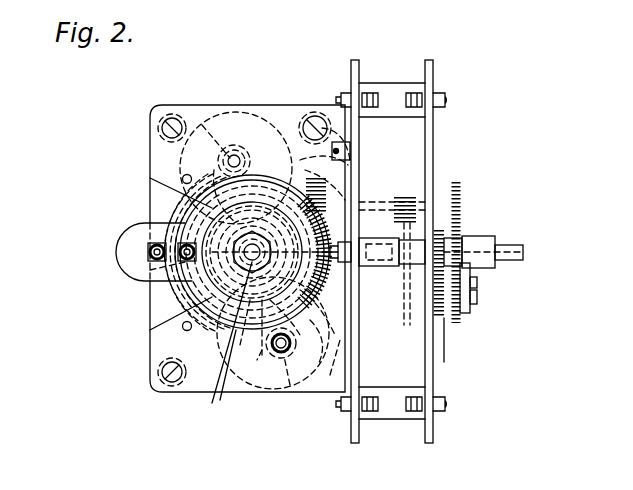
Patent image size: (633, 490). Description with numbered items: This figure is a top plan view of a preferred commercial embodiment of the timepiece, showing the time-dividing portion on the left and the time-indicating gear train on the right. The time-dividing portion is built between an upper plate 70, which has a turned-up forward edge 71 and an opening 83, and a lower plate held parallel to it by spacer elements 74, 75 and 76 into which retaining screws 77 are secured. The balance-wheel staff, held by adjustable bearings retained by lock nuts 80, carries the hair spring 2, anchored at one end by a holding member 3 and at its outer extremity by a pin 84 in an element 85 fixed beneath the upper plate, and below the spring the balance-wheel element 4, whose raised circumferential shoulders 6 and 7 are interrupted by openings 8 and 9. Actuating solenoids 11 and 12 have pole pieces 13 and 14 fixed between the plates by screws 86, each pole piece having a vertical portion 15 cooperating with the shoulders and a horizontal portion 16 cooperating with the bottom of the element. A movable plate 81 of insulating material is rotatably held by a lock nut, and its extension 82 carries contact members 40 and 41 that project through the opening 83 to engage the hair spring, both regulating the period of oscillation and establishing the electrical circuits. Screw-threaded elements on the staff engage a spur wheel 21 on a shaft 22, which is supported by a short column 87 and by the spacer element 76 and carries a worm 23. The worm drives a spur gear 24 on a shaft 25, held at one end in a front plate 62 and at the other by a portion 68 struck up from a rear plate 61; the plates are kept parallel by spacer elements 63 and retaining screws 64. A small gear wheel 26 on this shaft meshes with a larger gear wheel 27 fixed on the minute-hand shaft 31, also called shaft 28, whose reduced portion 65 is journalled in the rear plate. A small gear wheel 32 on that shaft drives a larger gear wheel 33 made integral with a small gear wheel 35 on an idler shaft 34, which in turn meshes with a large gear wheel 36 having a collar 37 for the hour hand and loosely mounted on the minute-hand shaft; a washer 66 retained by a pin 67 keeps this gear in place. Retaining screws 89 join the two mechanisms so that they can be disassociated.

The hair spring 2 is at (170, 213).
The holding member 3 is at (296, 320).
The balance-wheel element 4 is at (182, 282).
The raised circumferential shoulder 6 is at (200, 296).
The raised circumferential shoulder 7 is at (318, 298).
The opening 8 is at (258, 195).
The opening 9 is at (243, 331).
The actuating solenoid 11 is at (236, 145).
The actuating solenoid 12 is at (274, 386).
The pole piece 13 is at (246, 148).
The pole piece 14 is at (262, 355).
The vertical portion 15 is at (224, 148).
The horizontal portion 16 is at (215, 170).
The spur wheel 21 is at (352, 246).
The shaft 22 is at (330, 190).
The worm 23 is at (342, 190).
The spur gear 24 is at (298, 113).
The shaft 25 is at (371, 212).
The small gear wheel 26 is at (402, 197).
The larger gear wheel 27 is at (407, 325).
The shaft 28 is at (362, 264).
The minute hand shaft 31 is at (523, 252).
The small gear wheel 32 is at (442, 228).
The larger gear wheel 33 is at (446, 359).
The idler shaft 34 is at (478, 300).
The small gear wheel 35 is at (460, 316).
The large gear wheel 36 is at (460, 186).
The collar 37 is at (480, 236).
The contact member 40 is at (145, 243).
The contact member 41 is at (150, 282).
The rear plate 61 is at (359, 62).
The front plate 62 is at (433, 62).
The spacer element 63 is at (390, 83).
The retaining screw 64 is at (343, 93).
The reduced portion 65 is at (352, 268).
The washer 66 is at (470, 312).
The pin 67 is at (478, 282).
The struck-up portion 68 is at (350, 152).
The upper plate 70 is at (340, 106).
The turned-up forward edge 71 is at (350, 137).
The spacer element 74 is at (150, 128).
The spacer element 75 is at (160, 386).
The spacer element 76 is at (378, 104).
The retaining screw 77 is at (160, 112).
The lock nut 80 is at (226, 342).
The movable plate 81 is at (148, 252).
The extension 82 is at (140, 262).
The opening 83 is at (155, 192).
The pin 84 is at (249, 364).
The element 85 is at (288, 352).
The screw 86 is at (202, 125).
The column 87 is at (356, 286).
The retaining screw 89 is at (360, 165).